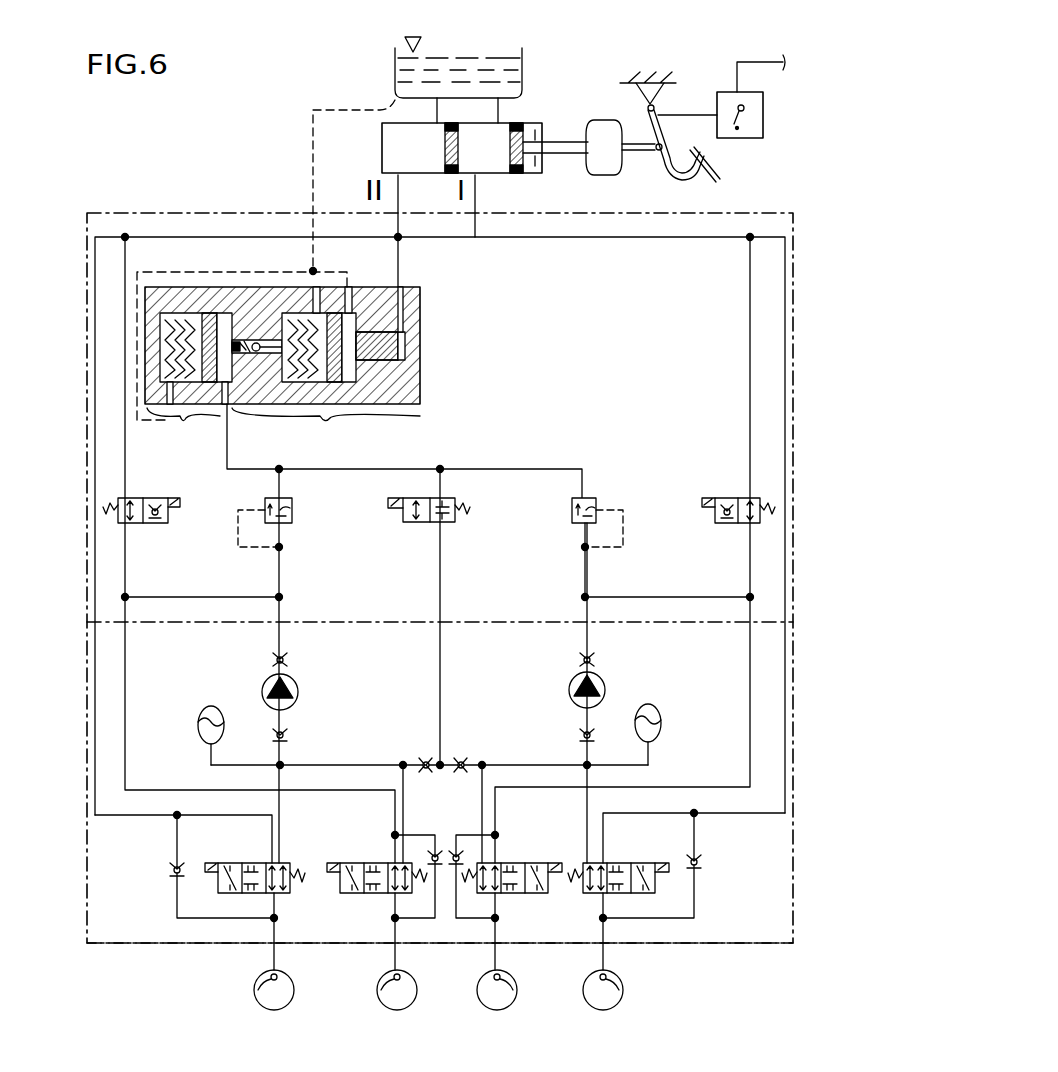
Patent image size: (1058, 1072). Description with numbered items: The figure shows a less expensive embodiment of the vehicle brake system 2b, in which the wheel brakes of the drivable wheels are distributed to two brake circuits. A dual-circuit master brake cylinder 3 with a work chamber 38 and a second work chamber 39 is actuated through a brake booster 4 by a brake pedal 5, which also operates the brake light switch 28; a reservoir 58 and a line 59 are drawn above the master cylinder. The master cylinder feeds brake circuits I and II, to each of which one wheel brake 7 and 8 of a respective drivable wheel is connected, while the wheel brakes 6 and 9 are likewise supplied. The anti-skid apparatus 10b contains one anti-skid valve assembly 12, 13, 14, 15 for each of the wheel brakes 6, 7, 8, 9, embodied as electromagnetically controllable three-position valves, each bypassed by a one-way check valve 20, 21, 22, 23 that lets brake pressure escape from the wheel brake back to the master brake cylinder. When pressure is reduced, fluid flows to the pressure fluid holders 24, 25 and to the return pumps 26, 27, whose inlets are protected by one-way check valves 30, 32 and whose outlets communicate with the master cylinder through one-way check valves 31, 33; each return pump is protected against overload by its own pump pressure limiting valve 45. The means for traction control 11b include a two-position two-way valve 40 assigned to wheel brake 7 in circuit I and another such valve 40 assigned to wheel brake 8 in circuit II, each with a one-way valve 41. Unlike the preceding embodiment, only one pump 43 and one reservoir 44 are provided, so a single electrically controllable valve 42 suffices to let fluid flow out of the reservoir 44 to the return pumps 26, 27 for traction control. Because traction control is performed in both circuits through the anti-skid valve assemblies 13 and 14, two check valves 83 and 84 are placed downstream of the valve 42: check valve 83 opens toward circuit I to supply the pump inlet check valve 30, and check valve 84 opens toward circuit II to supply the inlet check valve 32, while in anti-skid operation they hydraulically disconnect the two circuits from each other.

The vehicle brake system 2b is at (197, 202).
The master brake cylinder 3 is at (485, 163).
The brake booster 4 is at (613, 162).
The brake pedal 5 is at (702, 163).
The wheel brake 6 is at (621, 991).
The wheel brake 7 is at (515, 991).
The wheel brake 8 is at (379, 991).
The wheel brake 9 is at (256, 991).
The anti-skid apparatus 10b is at (770, 912).
The means for traction control 11b is at (752, 222).
The anti-skid valve assembly 12 is at (614, 863).
The anti-skid valve assembly 13 is at (512, 900).
The anti-skid valve assembly 14 is at (378, 895).
The anti-skid valve assembly 15 is at (288, 903).
The one-way check valve 20 is at (698, 862).
The one-way check valve 21 is at (455, 850).
The one-way check valve 22 is at (438, 850).
The one-way check valve 23 is at (172, 870).
The pressure fluid holder 24 is at (658, 730).
The pressure fluid holder 25 is at (200, 735).
The return pump 26 is at (598, 686).
The return pump 27 is at (290, 688).
The brake light switch 28 is at (732, 100).
The one-way check valve 30 is at (580, 736).
The one-way check valve 31 is at (580, 661).
The one-way check valve 32 is at (286, 736).
The one-way check valve 33 is at (274, 663).
The work chamber 38 is at (499, 162).
The second work chamber 39 is at (430, 162).
The 2/2-way valve 40 is at (441, 503).
The one-way valve 41 is at (165, 478).
The 2/2-way valve 42 is at (445, 522).
The pump 43 is at (359, 385).
The reservoir 44 is at (189, 384).
The pump pressure limiting valve 45 is at (292, 511).
The reservoir 58 is at (524, 72).
The return line 59 is at (396, 100).
The check valve 83 is at (456, 758).
The check valve 84 is at (428, 758).